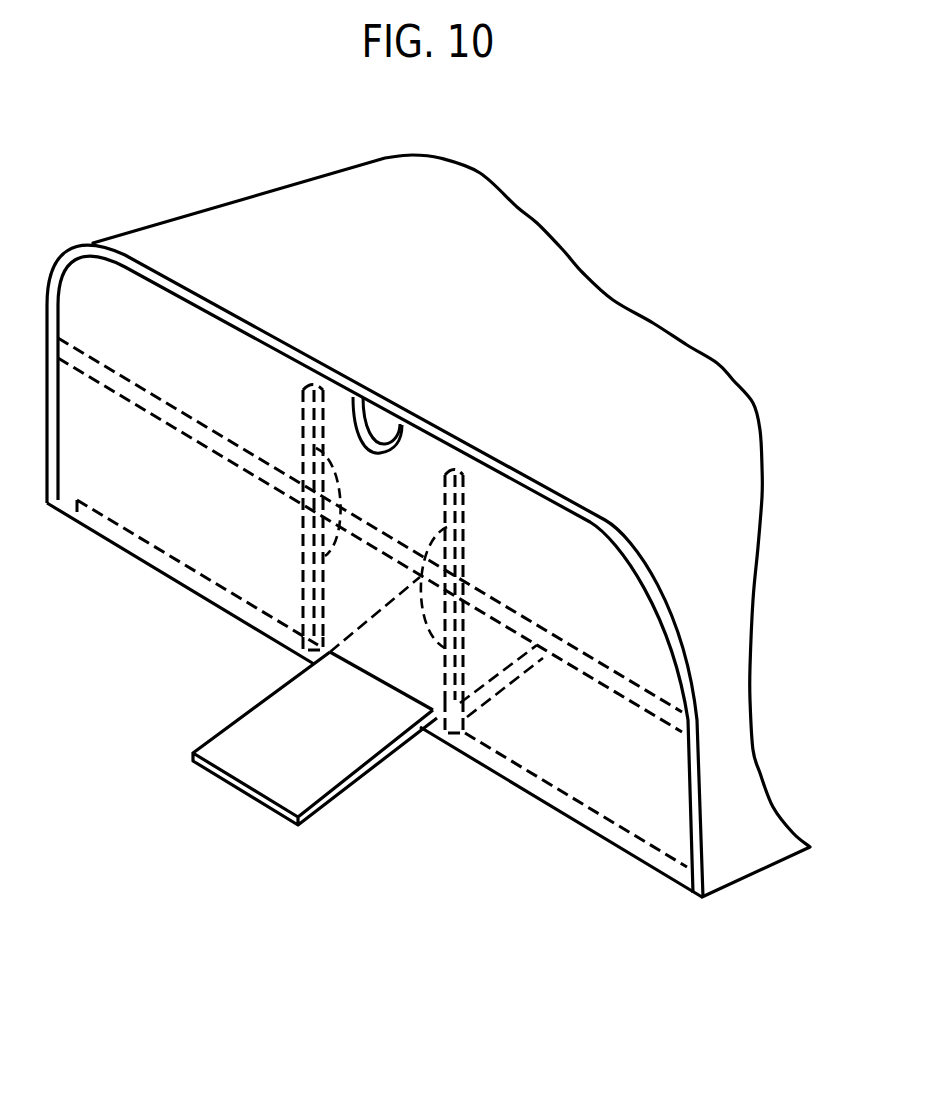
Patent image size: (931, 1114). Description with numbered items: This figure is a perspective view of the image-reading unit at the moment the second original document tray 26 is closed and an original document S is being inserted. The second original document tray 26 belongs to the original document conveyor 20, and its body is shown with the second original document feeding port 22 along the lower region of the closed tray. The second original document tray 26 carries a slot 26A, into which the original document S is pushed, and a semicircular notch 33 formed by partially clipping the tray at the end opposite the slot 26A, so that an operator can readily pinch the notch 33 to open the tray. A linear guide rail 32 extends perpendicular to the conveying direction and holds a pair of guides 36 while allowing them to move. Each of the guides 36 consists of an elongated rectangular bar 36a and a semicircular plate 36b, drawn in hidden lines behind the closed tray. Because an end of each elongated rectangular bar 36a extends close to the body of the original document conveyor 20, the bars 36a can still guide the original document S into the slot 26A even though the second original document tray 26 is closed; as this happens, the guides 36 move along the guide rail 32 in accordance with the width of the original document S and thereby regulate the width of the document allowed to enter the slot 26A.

The original document conveyor 20 is at (722, 378).
The second original document feeding port 22 is at (639, 855).
The second original document tray 26 is at (87, 266).
The slot 26A is at (418, 712).
The guide rail 32 is at (116, 388).
The notch 33 is at (380, 419).
The pair of guides 36 is at (334, 559).
The pair of elongated rectangular bars 36a is at (295, 500).
The pair of semicircular plates 36b is at (330, 527).
The original document S is at (281, 794).